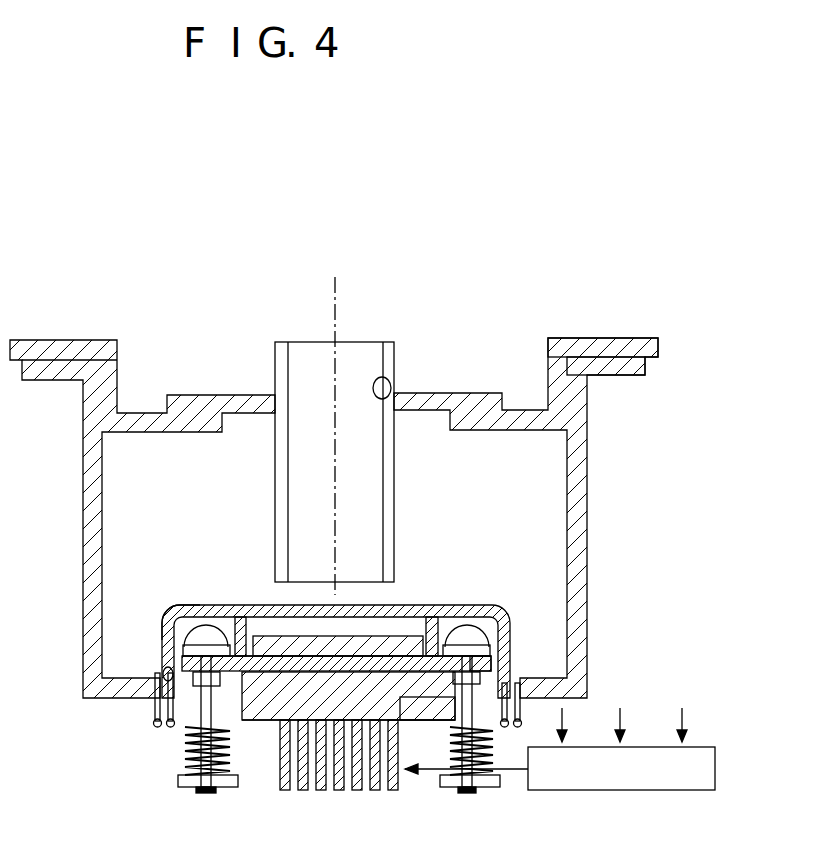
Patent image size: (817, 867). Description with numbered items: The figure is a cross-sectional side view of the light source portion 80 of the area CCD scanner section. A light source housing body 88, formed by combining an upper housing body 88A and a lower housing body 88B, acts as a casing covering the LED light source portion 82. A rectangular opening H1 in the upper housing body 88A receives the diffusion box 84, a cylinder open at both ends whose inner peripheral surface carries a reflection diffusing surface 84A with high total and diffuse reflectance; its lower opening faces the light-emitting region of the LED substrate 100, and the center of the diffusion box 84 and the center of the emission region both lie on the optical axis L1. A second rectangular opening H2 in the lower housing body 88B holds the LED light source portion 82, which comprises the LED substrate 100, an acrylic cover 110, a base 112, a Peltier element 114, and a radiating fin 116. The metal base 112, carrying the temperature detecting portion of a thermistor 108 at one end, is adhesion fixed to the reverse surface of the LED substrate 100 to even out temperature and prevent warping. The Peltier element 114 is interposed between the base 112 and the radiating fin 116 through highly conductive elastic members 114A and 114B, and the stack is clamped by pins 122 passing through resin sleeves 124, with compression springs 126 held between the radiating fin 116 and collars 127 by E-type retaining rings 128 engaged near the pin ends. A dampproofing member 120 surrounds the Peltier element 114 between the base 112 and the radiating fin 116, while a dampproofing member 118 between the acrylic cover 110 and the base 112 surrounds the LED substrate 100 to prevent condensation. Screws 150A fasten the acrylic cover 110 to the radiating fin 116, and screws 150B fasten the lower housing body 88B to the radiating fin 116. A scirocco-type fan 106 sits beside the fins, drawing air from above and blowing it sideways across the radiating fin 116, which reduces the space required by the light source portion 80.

The light source portion 80 is at (633, 238).
The LED light source portion 82 is at (540, 583).
The diffusion box 84 is at (395, 358).
The reflection diffusing surface 84A is at (288, 492).
The opening H1 is at (392, 380).
The optical axis L1 is at (335, 297).
The light source housing body 88 is at (745, 292).
The upper housing body 88A is at (617, 338).
The lower housing body 88B is at (617, 377).
The LED substrate 100 is at (420, 636).
The acrylic cover 110 is at (506, 605).
The base 112 is at (491, 660).
The Peltier element 114 is at (258, 690).
The elastic member 114A is at (395, 656).
The elastic member 114B is at (328, 720).
The radiating fin 116 is at (386, 792).
The dampproofing member 118 is at (238, 617).
The dampproofing member 120 is at (252, 710).
The pin 122 is at (170, 608).
The sleeve 124 is at (200, 722).
The compression spring 126 is at (186, 755).
The collar 127 is at (182, 782).
The E-type retaining ring 128 is at (196, 792).
The opening H2 is at (164, 668).
The screw 150A is at (164, 728).
The screw 150B is at (152, 708).
The fan 106 is at (700, 747).
The thermistor 108 is at (408, 700).